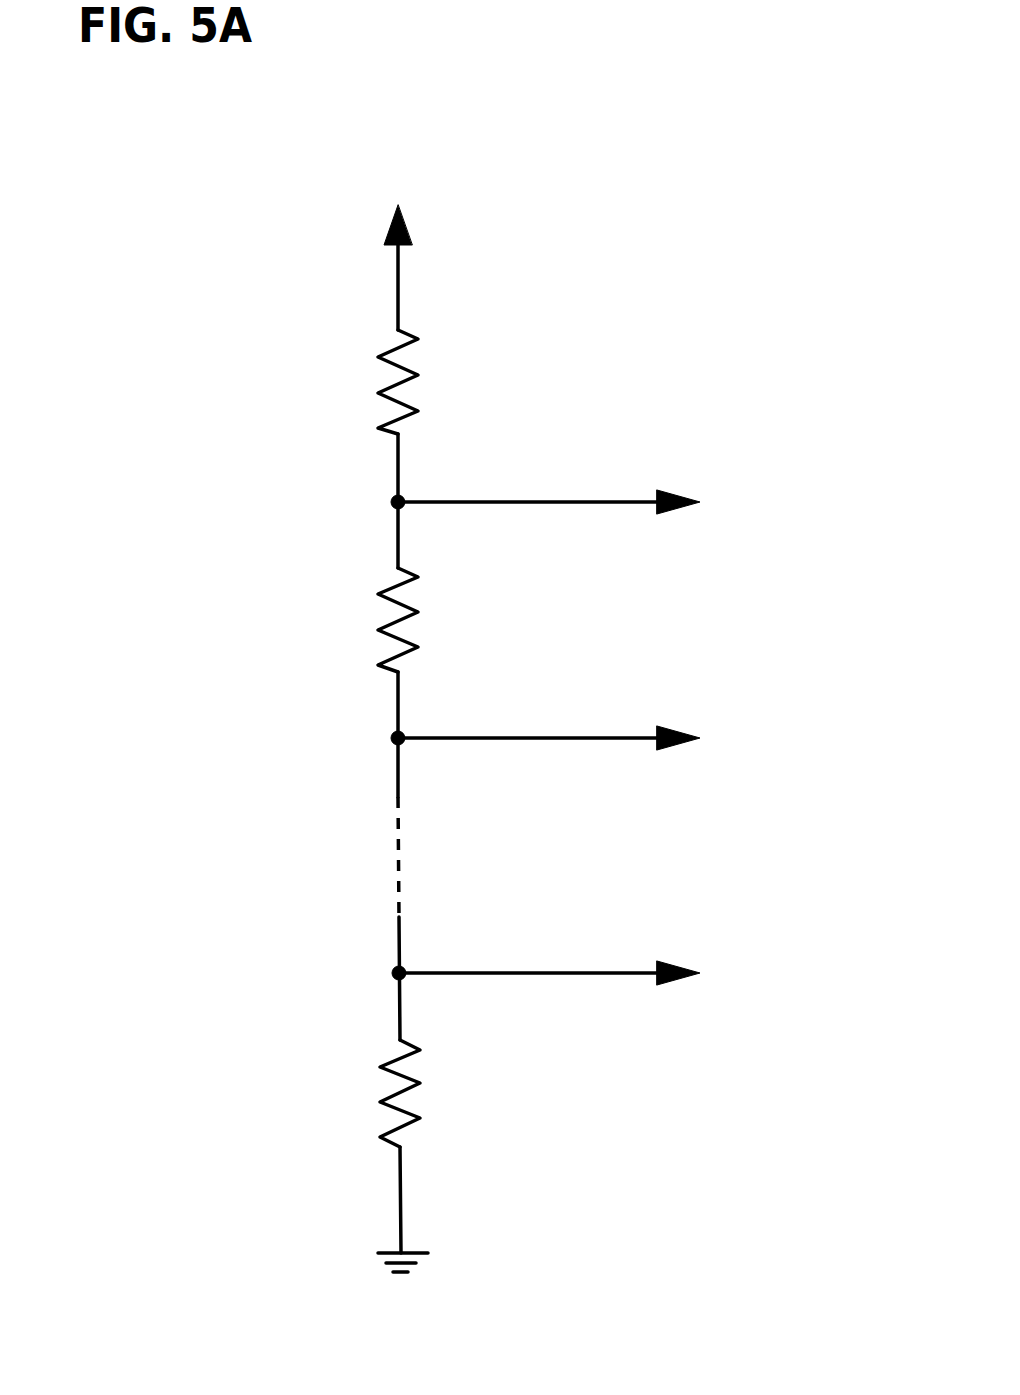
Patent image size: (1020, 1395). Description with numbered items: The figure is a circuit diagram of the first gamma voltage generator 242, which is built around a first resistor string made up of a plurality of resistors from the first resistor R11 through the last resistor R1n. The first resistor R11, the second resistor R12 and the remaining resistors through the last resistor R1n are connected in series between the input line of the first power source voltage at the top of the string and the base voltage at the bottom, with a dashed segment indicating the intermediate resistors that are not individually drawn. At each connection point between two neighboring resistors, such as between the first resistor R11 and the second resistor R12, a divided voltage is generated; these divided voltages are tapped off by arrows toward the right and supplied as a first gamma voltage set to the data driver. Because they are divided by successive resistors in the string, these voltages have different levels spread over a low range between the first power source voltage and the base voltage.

The first gamma voltage generator 242 is at (697, 142).
The resistor R11 is at (334, 382).
The resistor R12 is at (334, 618).
The resistor R1n is at (336, 1093).